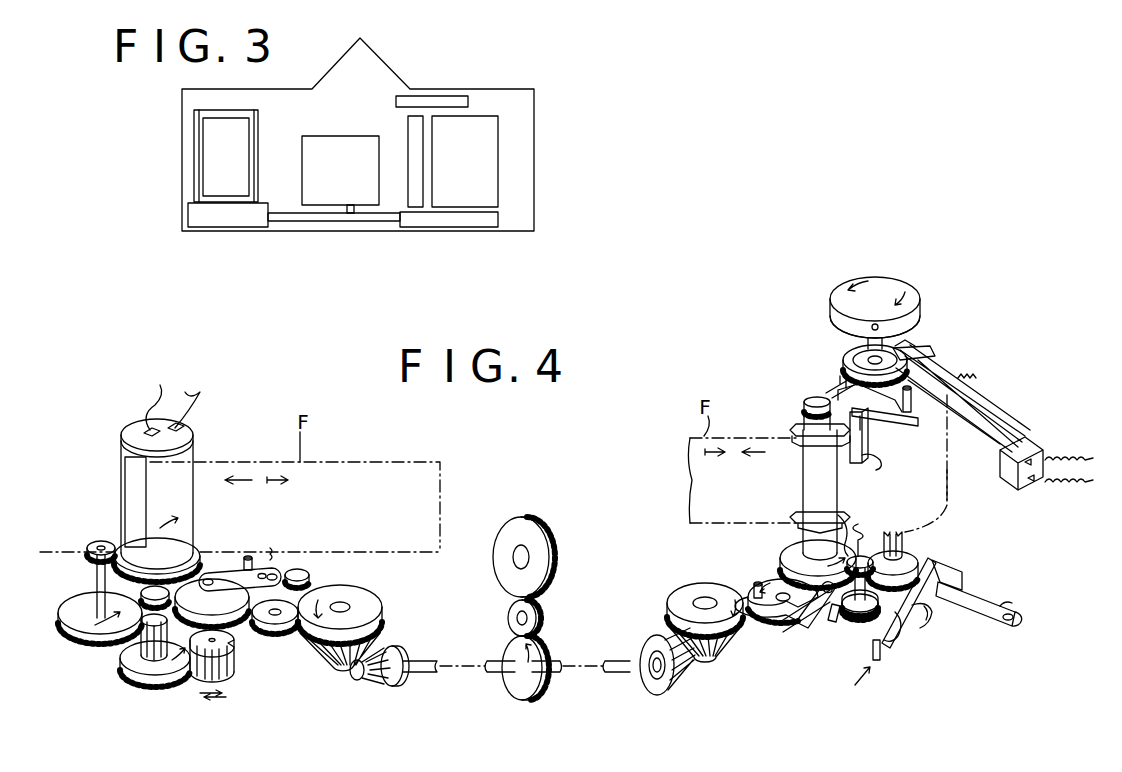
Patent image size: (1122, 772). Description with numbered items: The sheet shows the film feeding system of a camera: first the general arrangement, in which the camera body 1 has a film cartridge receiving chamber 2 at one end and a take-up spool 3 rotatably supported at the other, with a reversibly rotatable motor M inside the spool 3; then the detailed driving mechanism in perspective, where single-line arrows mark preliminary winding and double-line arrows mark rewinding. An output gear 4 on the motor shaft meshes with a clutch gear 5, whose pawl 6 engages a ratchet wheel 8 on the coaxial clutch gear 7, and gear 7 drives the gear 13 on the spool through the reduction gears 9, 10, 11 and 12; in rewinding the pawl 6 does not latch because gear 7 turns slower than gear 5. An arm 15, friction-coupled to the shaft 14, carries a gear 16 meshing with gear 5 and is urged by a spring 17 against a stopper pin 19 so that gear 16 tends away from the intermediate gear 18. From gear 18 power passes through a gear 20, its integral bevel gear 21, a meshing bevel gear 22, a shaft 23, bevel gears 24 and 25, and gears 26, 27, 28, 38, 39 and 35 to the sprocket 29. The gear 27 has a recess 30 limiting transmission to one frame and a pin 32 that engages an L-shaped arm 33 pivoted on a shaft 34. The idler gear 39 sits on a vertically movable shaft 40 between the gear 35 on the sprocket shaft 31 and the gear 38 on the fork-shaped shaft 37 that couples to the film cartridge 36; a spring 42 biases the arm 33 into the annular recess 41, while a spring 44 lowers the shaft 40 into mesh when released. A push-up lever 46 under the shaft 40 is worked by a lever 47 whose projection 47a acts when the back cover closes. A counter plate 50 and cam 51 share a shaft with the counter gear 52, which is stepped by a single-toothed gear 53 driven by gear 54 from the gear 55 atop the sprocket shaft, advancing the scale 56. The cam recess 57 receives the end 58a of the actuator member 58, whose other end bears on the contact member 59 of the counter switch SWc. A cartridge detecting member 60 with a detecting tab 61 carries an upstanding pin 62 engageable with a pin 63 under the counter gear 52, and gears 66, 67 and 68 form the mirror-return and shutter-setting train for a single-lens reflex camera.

In FIG. 3, the camera body 1 is at (537, 133).
In FIG. 3, the film cartridge receiving chamber 2 is at (512, 203).
In FIG. 3, the take-up spool 3 is at (196, 130).
In FIG. 4, the take-up spool 3 is at (195, 452).
In FIG. 3, the motor M is at (217, 163).
In FIG. 4, the output gear 4 is at (142, 601).
In FIG. 4, the clutch gear 5 is at (232, 609).
In FIG. 4, the pawl 6 is at (202, 680).
In FIG. 4, the clutch gear 7 is at (234, 668).
In FIG. 4, the ratchet wheel 8 is at (233, 646).
In FIG. 4, the gear 9 is at (158, 684).
In FIG. 4, the gear 10 is at (142, 652).
In FIG. 4, the gear 11 is at (80, 637).
In FIG. 4, the gear 12 is at (86, 555).
In FIG. 4, the gear 13 is at (131, 522).
In FIG. 4, the shaft 14 is at (212, 577).
In FIG. 4, the arm 15 is at (252, 558).
In FIG. 4, the gear 16 is at (296, 572).
In FIG. 4, the spring 17 is at (278, 572).
In FIG. 4, the intermediate gear 18 is at (322, 588).
In FIG. 4, the stopper pin 19 is at (262, 572).
In FIG. 4, the gear 20 is at (380, 612).
In FIG. 4, the bevel gear 21 is at (320, 653).
In FIG. 4, the bevel gear 22 is at (358, 688).
In FIG. 4, the shaft 23 is at (412, 674).
In FIG. 4, the bevel gear 24 is at (684, 682).
In FIG. 4, the bevel gear 25 is at (725, 643).
In FIG. 4, the gear 26 is at (668, 616).
In FIG. 4, the gear 27 is at (775, 622).
In FIG. 4, the gear 28 is at (842, 614).
In FIG. 4, the sprocket 29 is at (803, 466).
In FIG. 4, the recess 30 is at (786, 633).
In FIG. 4, the shaft 31 is at (846, 524).
In FIG. 4, the pin 32 is at (752, 586).
In FIG. 4, the L-shaped arm 33 is at (801, 631).
In FIG. 4, the shaft 34 is at (832, 621).
In FIG. 4, the gear 35 is at (786, 563).
In FIG. 4, the film cartridge 36 is at (950, 478).
In FIG. 4, the fork-shaped shaft 37 is at (902, 536).
In FIG. 4, the gear 38 is at (926, 562).
In FIG. 4, the idler gear 39 is at (866, 552).
In FIG. 4, the shaft 40 is at (892, 640).
In FIG. 4, the annular recess 41 is at (879, 652).
In FIG. 4, the spring 42 is at (856, 616).
In FIG. 4, the spring 44 is at (862, 526).
In FIG. 4, the push-up lever 46 is at (926, 623).
In FIG. 4, the lever 47 is at (942, 580).
In FIG. 4, the projection 47a is at (926, 646).
In FIG. 4, the counter plate 50 is at (905, 290).
In FIG. 4, the cam 51 is at (855, 356).
In FIG. 4, the counter gear 52 is at (845, 360).
In FIG. 4, the single-toothed gear 53 is at (838, 380).
In FIG. 4, the gear 54 is at (863, 440).
In FIG. 4, the gear 55 is at (804, 405).
In FIG. 4, the scale 56 is at (918, 317).
In FIG. 4, the recess 57 is at (906, 342).
In FIG. 4, the actuator member 58 is at (955, 380).
In FIG. 4, the end 58a is at (925, 356).
In FIG. 4, the contact member 59 is at (996, 430).
In FIG. 4, the cartridge detecting member 60 is at (880, 460).
In FIG. 4, the detecting tab 61 is at (876, 476).
In FIG. 4, the upstanding pin 62 is at (908, 414).
In FIG. 4, the pin 63 is at (870, 421).
In FIG. 4, the gear 66 is at (524, 688).
In FIG. 4, the gear 67 is at (542, 620).
In FIG. 4, the gear 68 is at (548, 533).
In FIG. 4, the counter switch SWc is at (1035, 449).